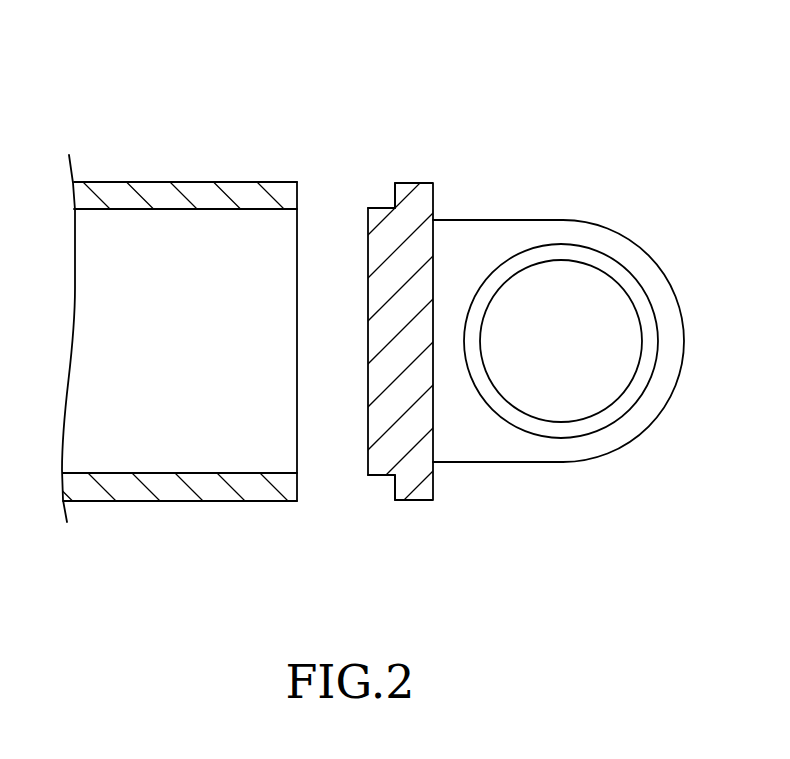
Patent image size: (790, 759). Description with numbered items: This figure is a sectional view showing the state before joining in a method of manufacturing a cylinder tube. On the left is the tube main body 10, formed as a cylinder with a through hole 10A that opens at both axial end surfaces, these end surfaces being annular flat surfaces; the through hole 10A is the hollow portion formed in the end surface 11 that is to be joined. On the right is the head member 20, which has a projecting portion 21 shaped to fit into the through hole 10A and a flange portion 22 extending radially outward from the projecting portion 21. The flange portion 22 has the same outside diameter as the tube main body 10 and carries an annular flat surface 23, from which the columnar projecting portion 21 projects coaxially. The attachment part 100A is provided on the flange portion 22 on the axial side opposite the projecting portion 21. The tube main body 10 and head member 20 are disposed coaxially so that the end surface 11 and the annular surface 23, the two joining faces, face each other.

The tube main body 10 is at (212, 197).
The end surface 11 is at (305, 190).
The through hole 10A is at (209, 472).
The head member 20 is at (574, 138).
The projecting portion 21 is at (374, 205).
The flange portion 22 is at (417, 195).
The annular surface 23 is at (389, 488).
The attachment part 100A is at (547, 463).